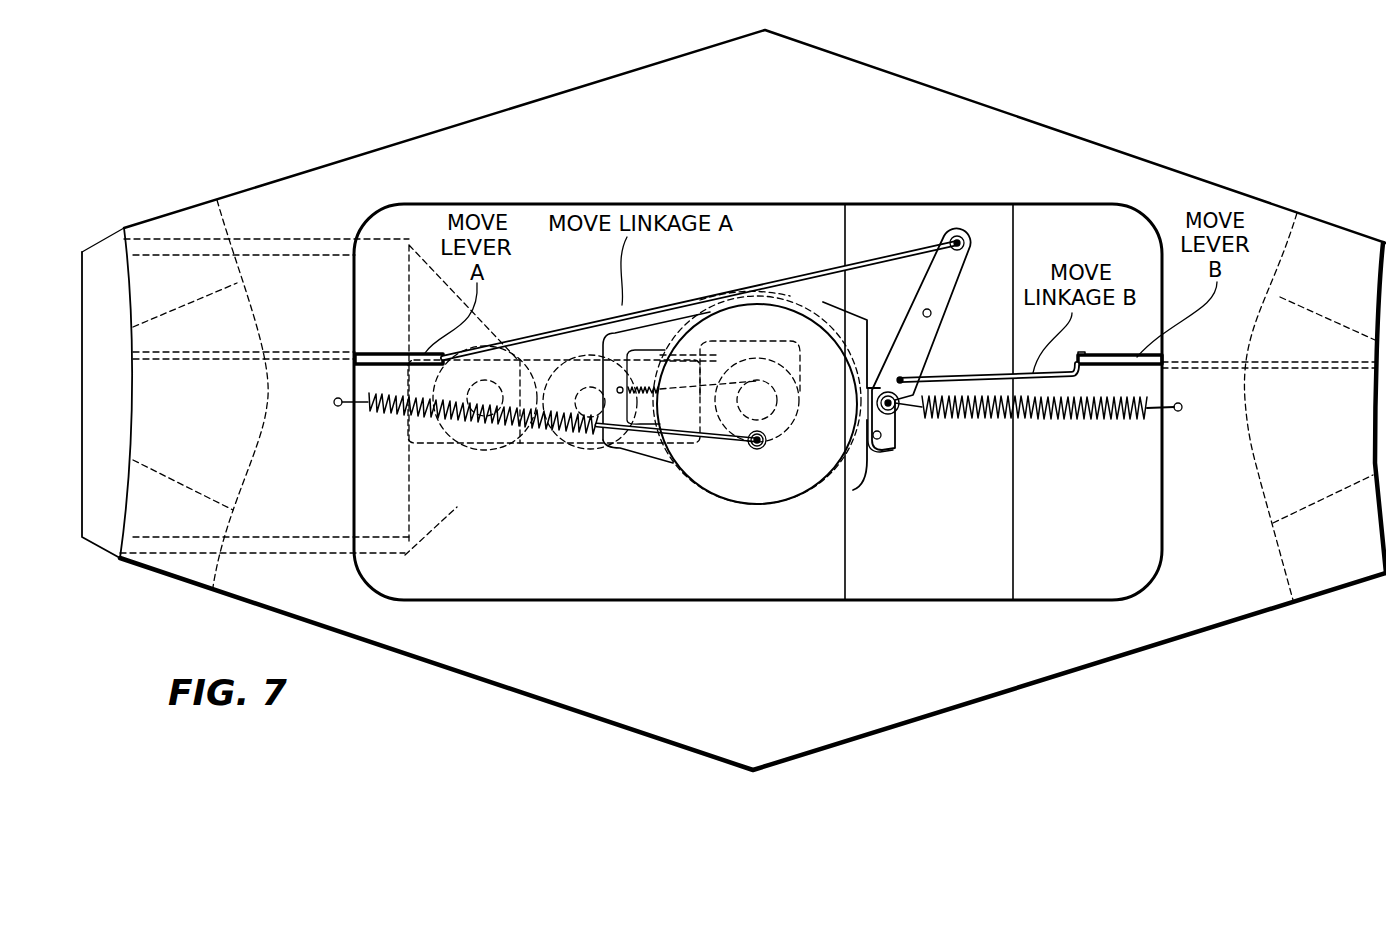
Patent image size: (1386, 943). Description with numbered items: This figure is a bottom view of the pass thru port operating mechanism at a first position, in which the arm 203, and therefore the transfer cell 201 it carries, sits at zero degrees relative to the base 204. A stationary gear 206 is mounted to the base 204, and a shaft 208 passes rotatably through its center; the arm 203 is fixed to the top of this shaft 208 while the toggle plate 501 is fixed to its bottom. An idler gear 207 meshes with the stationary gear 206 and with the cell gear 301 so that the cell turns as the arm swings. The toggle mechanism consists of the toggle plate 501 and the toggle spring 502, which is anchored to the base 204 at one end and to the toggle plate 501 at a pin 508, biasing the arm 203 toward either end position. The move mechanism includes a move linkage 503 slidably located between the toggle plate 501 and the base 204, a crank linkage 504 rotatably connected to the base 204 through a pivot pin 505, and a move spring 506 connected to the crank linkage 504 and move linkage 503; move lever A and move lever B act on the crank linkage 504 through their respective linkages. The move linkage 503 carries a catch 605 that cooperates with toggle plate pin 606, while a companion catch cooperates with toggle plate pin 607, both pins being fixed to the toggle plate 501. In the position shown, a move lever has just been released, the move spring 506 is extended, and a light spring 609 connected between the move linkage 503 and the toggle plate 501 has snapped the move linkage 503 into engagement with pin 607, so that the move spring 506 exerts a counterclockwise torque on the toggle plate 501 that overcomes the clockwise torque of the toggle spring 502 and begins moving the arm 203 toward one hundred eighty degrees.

The transfer cell 201 is at (100, 518).
The base 204 is at (915, 702).
The arm 203 is at (537, 443).
The cell gear 301 is at (457, 468).
The toggle spring 502 is at (392, 415).
The idler gear 207 is at (593, 348).
The light spring 609 is at (673, 415).
The toggle plate pin 607 is at (722, 443).
The toggle plate 501 is at (738, 492).
The toggle plate pin 606 is at (845, 507).
The catch 605 is at (720, 356).
The stationary gear 206 is at (780, 298).
The shaft 208 is at (765, 398).
The pin 508 is at (755, 447).
The pivot pin 505 is at (932, 316).
The crank linkage 504 is at (968, 243).
The move linkage 503 is at (860, 467).
The move spring 506 is at (1103, 418).